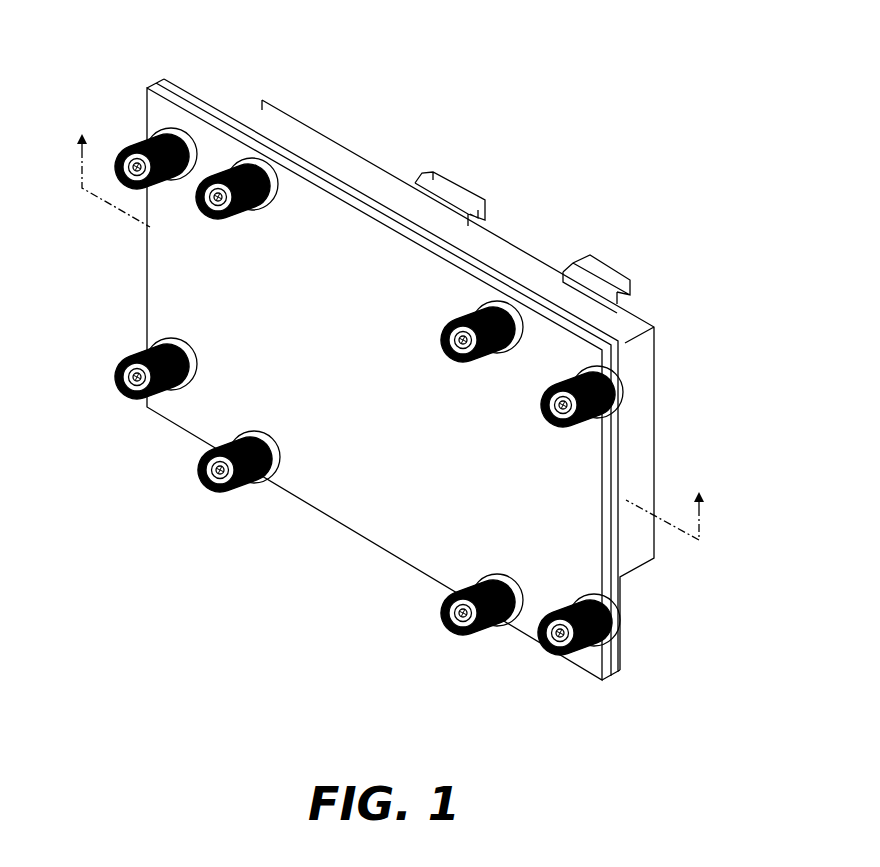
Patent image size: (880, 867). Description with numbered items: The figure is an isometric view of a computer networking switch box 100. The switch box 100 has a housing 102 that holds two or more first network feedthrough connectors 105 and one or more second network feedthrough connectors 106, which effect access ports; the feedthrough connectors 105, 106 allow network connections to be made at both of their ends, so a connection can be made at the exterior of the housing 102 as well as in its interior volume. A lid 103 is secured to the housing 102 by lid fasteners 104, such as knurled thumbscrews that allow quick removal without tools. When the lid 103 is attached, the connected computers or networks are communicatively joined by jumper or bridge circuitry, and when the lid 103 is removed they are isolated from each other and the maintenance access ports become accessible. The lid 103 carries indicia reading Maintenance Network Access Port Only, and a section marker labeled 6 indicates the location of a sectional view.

The switch box 100 is at (134, 80).
The housing 102 is at (513, 270).
The lid 103 is at (332, 493).
The lid fasteners 104 is at (205, 458).
The first network feedthrough connectors 105 is at (620, 278).
The second network feedthrough connectors 106 is at (452, 197).
The section line for FIG. 6 is at (391, 326).